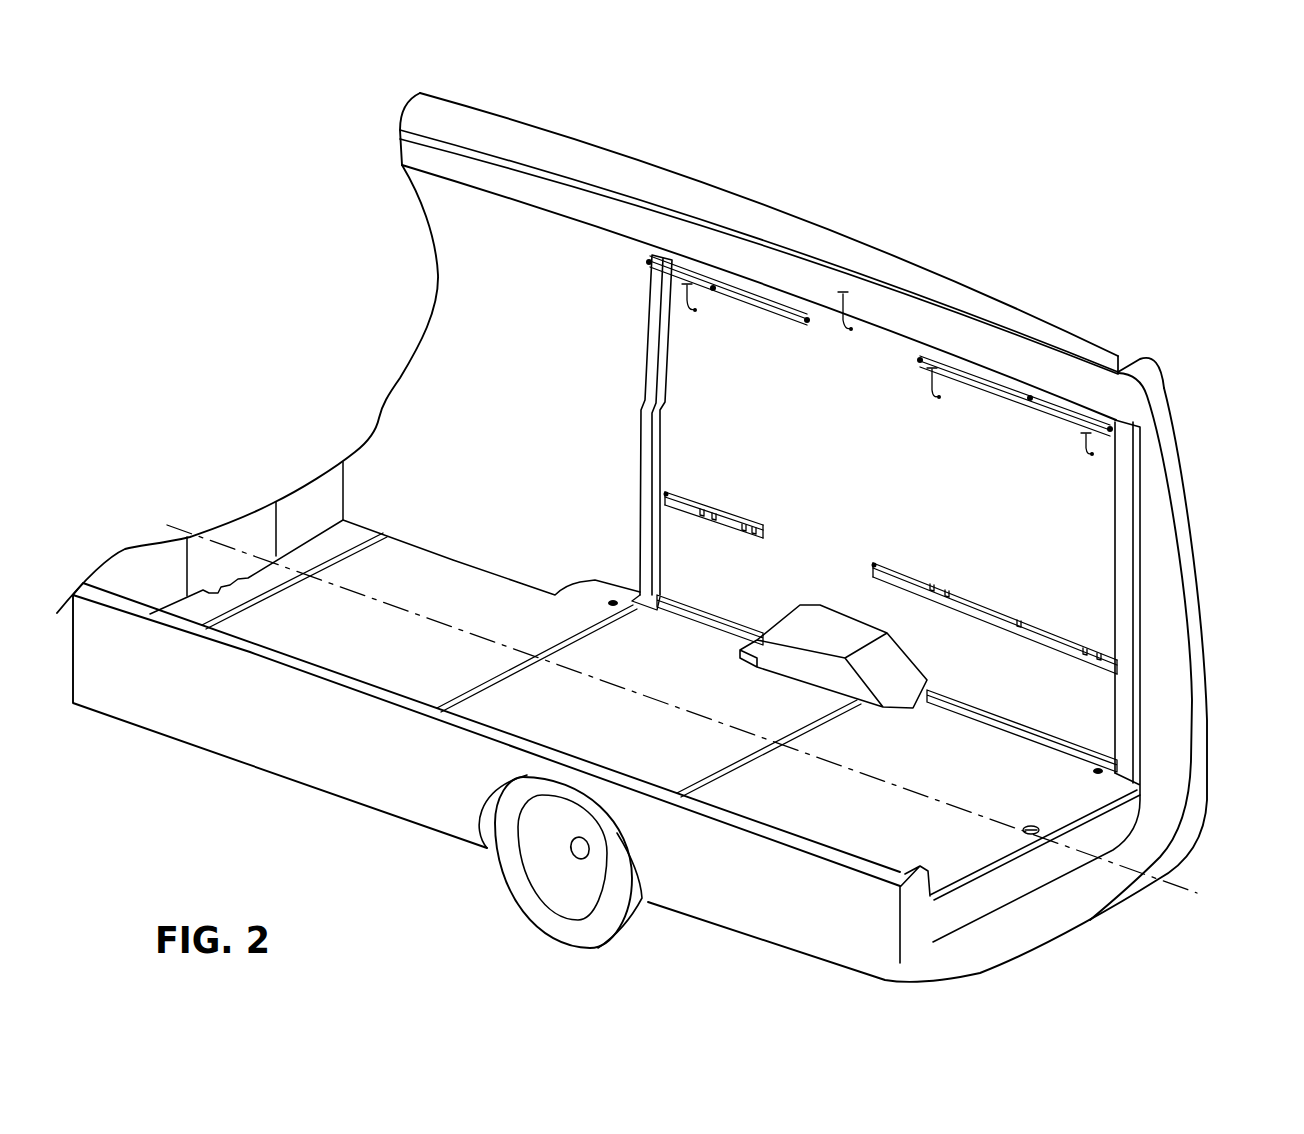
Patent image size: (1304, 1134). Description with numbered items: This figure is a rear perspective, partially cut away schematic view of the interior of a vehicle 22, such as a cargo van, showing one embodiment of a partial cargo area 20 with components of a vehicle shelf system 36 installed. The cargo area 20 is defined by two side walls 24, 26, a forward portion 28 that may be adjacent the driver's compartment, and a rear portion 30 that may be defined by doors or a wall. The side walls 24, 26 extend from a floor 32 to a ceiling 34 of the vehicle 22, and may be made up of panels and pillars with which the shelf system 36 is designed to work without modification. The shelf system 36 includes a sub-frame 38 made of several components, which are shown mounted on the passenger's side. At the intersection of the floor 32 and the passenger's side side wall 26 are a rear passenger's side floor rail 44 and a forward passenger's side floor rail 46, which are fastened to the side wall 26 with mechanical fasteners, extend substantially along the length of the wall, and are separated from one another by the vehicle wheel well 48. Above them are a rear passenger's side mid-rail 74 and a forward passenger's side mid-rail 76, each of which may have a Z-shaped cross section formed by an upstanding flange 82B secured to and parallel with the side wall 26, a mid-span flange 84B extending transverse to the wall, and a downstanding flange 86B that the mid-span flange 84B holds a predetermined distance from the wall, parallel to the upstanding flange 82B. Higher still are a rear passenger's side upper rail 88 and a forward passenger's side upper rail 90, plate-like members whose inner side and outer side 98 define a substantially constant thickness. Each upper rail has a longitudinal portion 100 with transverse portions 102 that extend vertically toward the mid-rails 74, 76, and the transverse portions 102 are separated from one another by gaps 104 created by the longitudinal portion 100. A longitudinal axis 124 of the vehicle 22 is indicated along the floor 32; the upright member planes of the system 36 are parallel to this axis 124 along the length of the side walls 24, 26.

The cargo area 20 is at (866, 300).
The vehicle 22 is at (595, 158).
The side wall 24 is at (342, 768).
The side wall 26 is at (1140, 385).
The forward portion 28 is at (466, 122).
The rear portion 30 is at (1111, 345).
The floor 32 is at (942, 863).
The ceiling 34 is at (535, 137).
The vehicle shelf system 36 is at (1128, 503).
The sub-frame 38 is at (1090, 681).
The rear passenger's side floor rail 44 is at (1037, 742).
The forward passenger's side floor rail 46 is at (697, 617).
The vehicle wheel well 48 is at (777, 677).
The rear passenger's side mid-rail 74 is at (1000, 602).
The forward passenger's side mid-rail 76 is at (723, 503).
The upstanding flange 82B is at (665, 490).
The mid-span flange 84B is at (765, 525).
The downstanding flange 86B is at (743, 538).
The rear passenger's side upper rail 88 is at (973, 377).
The forward passenger's side upper rail 90 is at (747, 297).
The outer side 98 is at (687, 281).
The longitudinal portion 100 is at (783, 318).
The transverse portion 102 is at (693, 306).
The gap 104 is at (720, 300).
The longitudinal axis 124 is at (1177, 888).